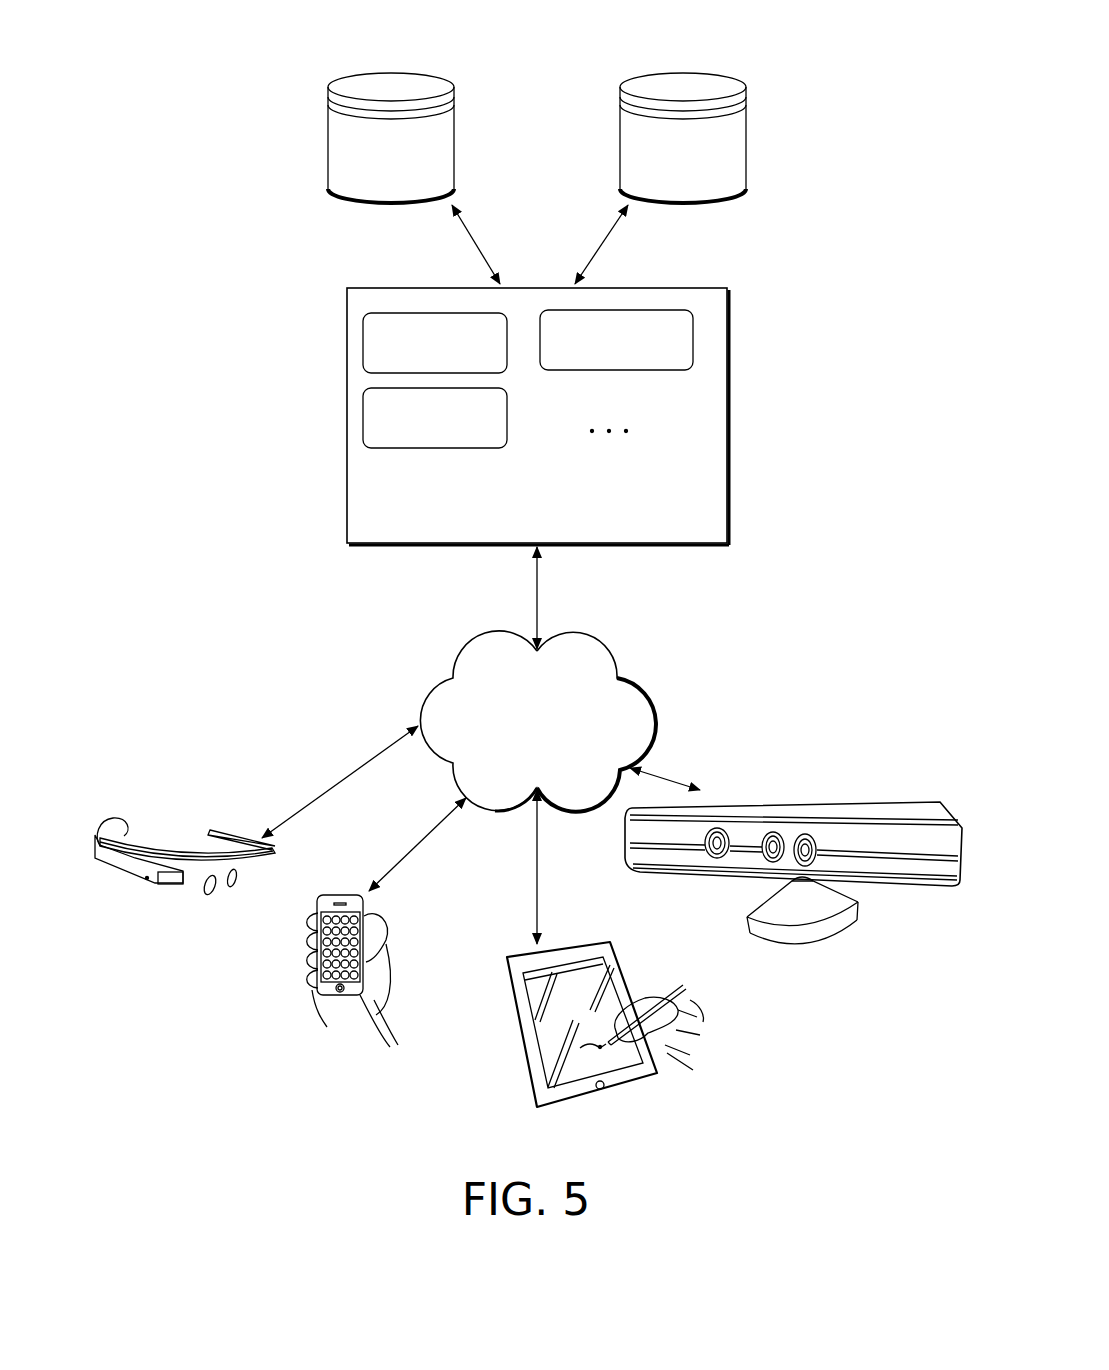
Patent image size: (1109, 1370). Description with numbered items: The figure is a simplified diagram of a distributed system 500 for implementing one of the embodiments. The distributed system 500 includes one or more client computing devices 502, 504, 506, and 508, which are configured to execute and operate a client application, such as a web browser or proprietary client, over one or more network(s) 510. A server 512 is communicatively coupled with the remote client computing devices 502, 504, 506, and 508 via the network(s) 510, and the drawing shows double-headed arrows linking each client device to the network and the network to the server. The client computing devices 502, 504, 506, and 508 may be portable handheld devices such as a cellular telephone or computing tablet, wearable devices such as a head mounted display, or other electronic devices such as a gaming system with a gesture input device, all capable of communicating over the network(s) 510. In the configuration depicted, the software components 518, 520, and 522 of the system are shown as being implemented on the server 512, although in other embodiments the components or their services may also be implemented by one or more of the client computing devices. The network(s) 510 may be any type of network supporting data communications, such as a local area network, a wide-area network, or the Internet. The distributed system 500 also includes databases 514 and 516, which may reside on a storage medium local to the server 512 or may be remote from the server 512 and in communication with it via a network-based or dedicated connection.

The distributed system 500 is at (821, 86).
The client computing device 502 is at (153, 884).
The client computing device 504 is at (352, 974).
The client computing device 506 is at (620, 1092).
The client computing device 508 is at (828, 797).
The network(s) 510 is at (538, 721).
The server 512 is at (538, 416).
The database 514 is at (391, 138).
The database 516 is at (683, 138).
The software component 518 is at (435, 343).
The software component 520 is at (616, 340).
The software component 522 is at (435, 418).